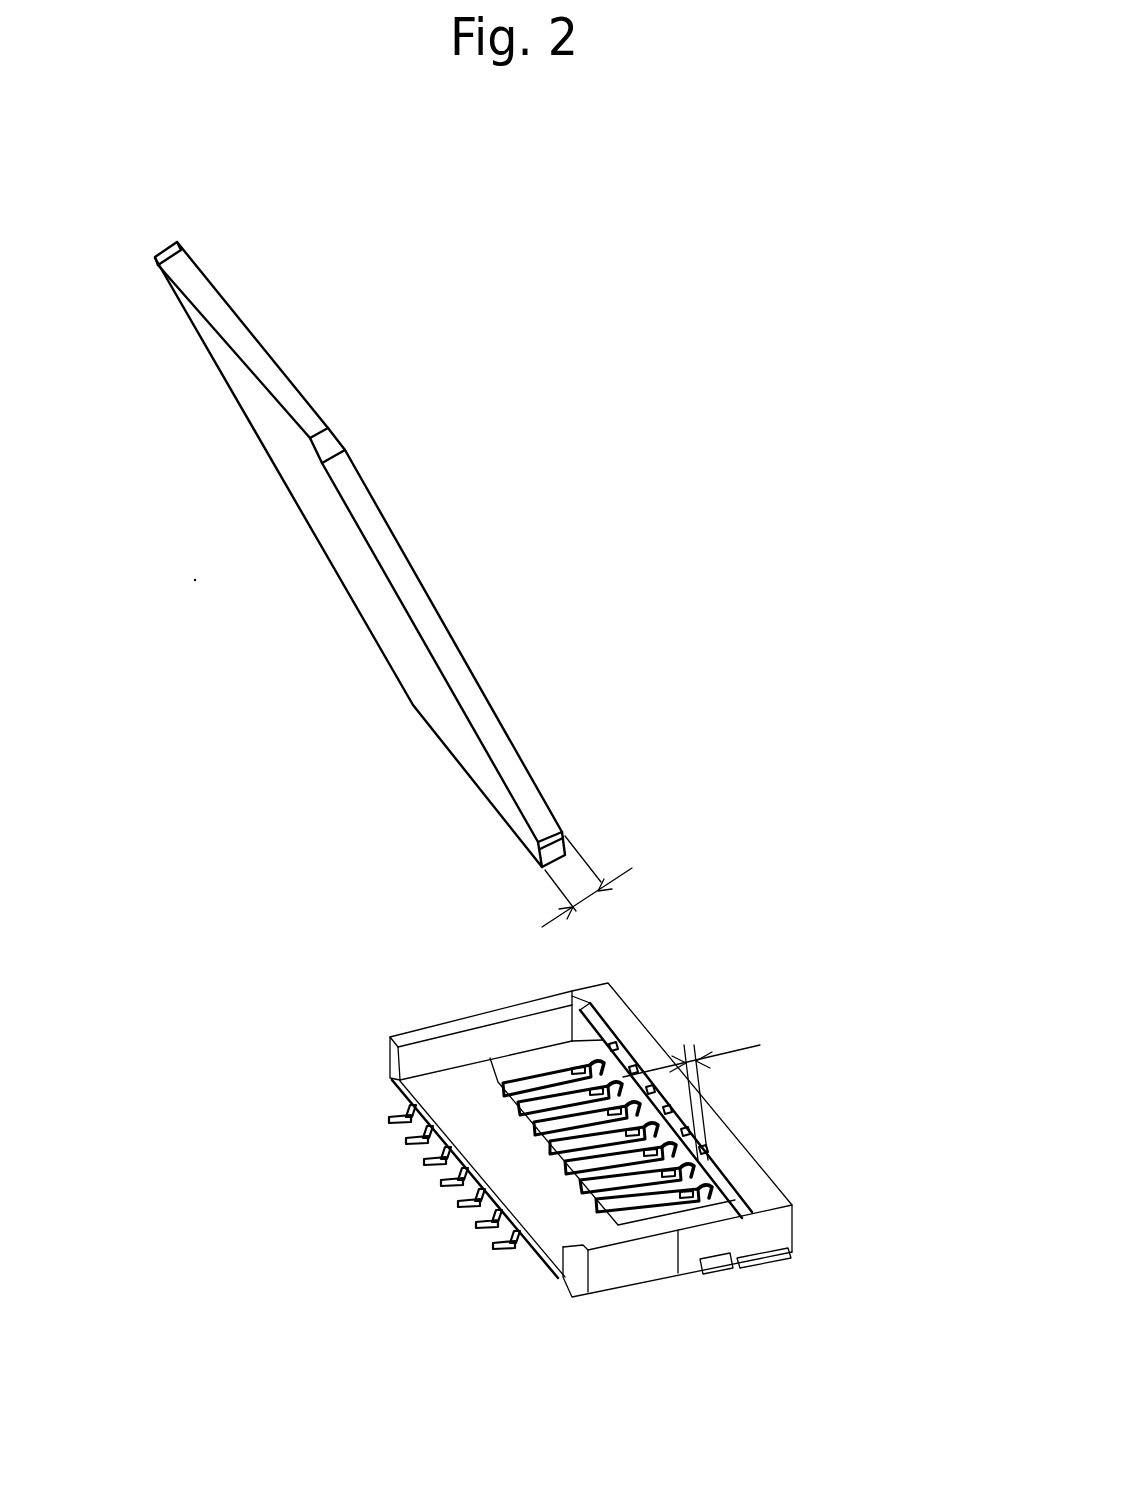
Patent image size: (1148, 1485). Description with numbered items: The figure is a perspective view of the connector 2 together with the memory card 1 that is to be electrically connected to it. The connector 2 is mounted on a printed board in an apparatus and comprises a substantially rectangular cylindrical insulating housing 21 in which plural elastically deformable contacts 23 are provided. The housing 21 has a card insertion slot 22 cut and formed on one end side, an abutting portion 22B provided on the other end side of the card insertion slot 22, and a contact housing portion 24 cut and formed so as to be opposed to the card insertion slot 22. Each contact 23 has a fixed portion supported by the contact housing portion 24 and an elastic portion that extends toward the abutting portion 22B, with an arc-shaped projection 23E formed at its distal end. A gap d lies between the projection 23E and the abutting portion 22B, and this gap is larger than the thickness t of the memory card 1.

The memory card 1 is at (493, 557).
The connector 2 is at (559, 1132).
The housing 21 is at (745, 1172).
The card insertion slot 22 is at (544, 1033).
The abutting portion 22B is at (752, 1207).
The contact 23 is at (574, 1147).
The projection 23E is at (688, 1167).
The contact housing portion 24 is at (582, 1150).